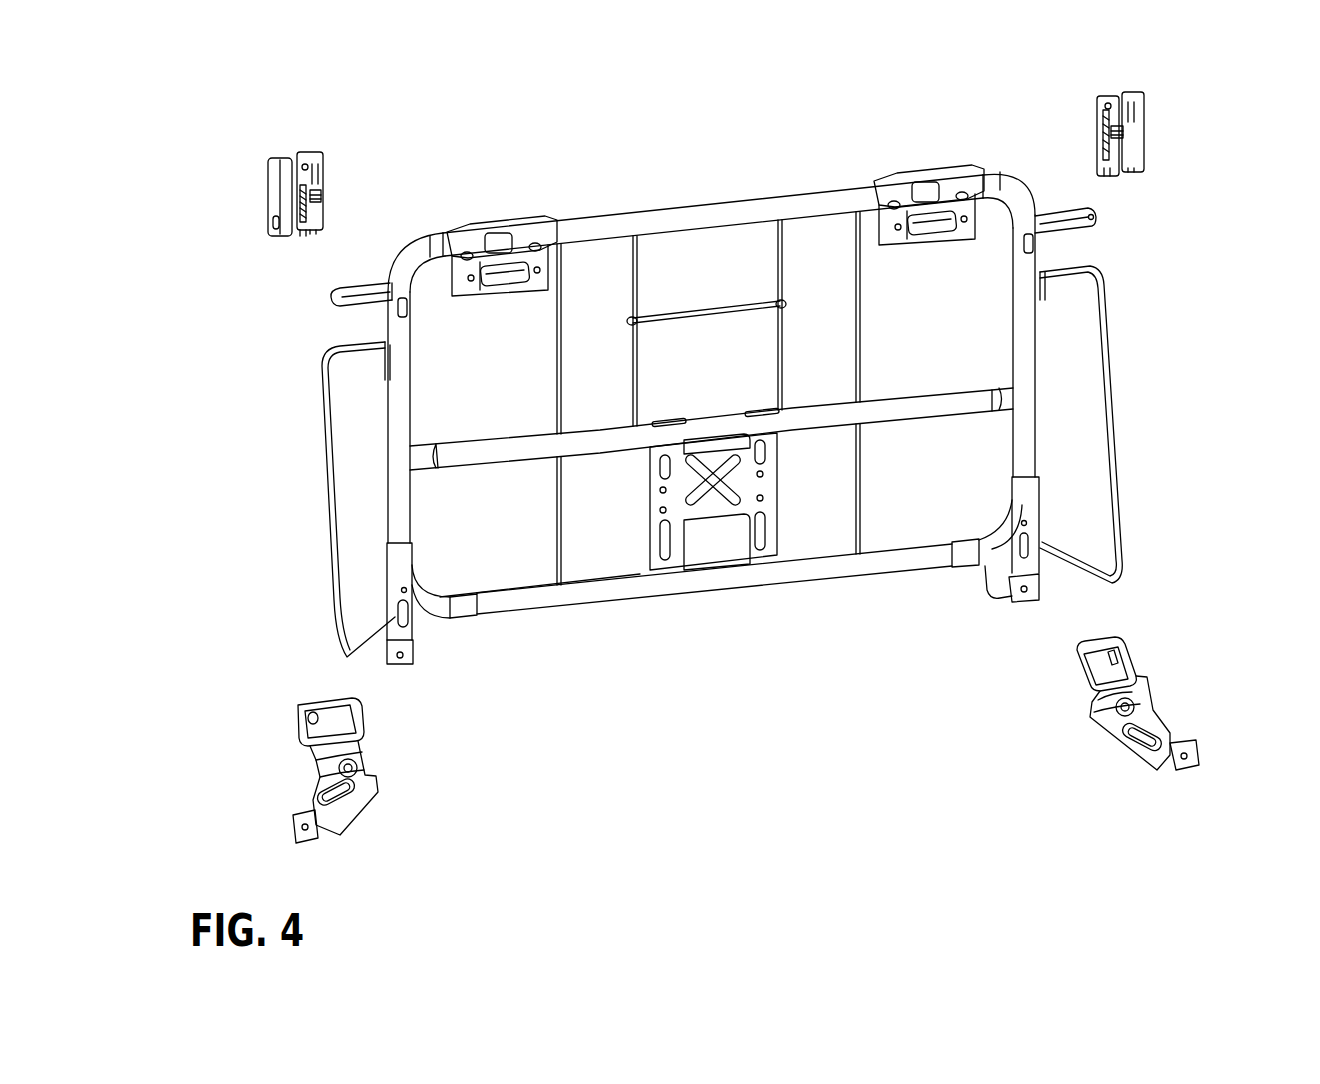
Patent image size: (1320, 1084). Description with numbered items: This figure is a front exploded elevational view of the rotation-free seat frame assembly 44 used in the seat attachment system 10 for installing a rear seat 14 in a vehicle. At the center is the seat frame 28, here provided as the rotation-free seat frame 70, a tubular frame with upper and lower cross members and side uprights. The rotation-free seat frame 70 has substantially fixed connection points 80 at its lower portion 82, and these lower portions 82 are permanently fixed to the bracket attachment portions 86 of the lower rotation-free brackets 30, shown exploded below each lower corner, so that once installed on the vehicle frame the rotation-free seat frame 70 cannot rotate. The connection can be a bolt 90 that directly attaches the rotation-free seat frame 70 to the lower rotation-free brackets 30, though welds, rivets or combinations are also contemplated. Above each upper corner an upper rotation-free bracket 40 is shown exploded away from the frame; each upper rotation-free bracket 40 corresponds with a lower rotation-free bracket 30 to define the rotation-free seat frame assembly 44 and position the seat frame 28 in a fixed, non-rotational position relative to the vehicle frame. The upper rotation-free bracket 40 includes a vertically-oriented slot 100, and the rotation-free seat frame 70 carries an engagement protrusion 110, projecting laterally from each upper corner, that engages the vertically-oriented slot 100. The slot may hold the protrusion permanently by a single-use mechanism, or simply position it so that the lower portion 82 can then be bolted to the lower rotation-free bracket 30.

The seat attachment system 10 is at (444, 186).
The rear seat 14 is at (806, 158).
The seat frame 28 is at (622, 622).
The lower rotation-free bracket 30 is at (372, 799).
The upper rotation-free bracket 40 is at (272, 203).
The rotation-free seat frame assembly 44 is at (1168, 324).
The rotation-free seat frame 70 is at (681, 216).
The fixed connection points 80 is at (404, 670).
The lower portion 82 is at (414, 631).
The bracket attachment portion 86 is at (1137, 687).
The bolt 90 is at (318, 765).
The vertically-oriented slot 100 is at (290, 185).
The engagement protrusion 110 is at (330, 297).